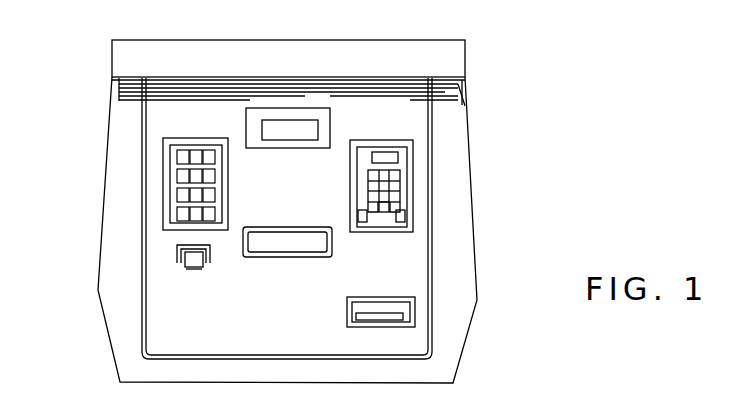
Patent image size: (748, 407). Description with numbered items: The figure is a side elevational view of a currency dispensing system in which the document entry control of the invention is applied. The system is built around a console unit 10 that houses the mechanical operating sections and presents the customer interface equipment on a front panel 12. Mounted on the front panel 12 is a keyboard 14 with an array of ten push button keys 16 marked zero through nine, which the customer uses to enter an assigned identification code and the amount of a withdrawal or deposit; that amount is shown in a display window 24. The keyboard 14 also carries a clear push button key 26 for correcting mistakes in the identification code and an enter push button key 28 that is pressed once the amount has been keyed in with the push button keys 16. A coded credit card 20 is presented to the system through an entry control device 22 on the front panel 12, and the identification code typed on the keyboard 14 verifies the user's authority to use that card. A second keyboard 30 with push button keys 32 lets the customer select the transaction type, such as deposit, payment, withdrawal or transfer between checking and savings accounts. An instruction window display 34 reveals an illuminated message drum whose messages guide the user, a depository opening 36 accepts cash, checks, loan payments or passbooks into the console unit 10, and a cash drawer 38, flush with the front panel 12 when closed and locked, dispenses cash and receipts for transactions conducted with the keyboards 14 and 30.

The console unit 10 is at (482, 106).
The front panel 12 is at (290, 316).
The keyboard 14 is at (389, 143).
The push button keys 16 is at (368, 184).
The coded credit card 20 is at (194, 261).
The entry control device 22 is at (176, 248).
The display window 24 is at (388, 158).
The clear push button key 26 is at (360, 224).
The enter push button key 28 is at (401, 224).
The keyboard 30 is at (210, 140).
The push button keys 32 is at (166, 169).
The instruction window display 34 is at (305, 127).
The depository opening 36 is at (380, 316).
The cash drawer 38 is at (278, 240).